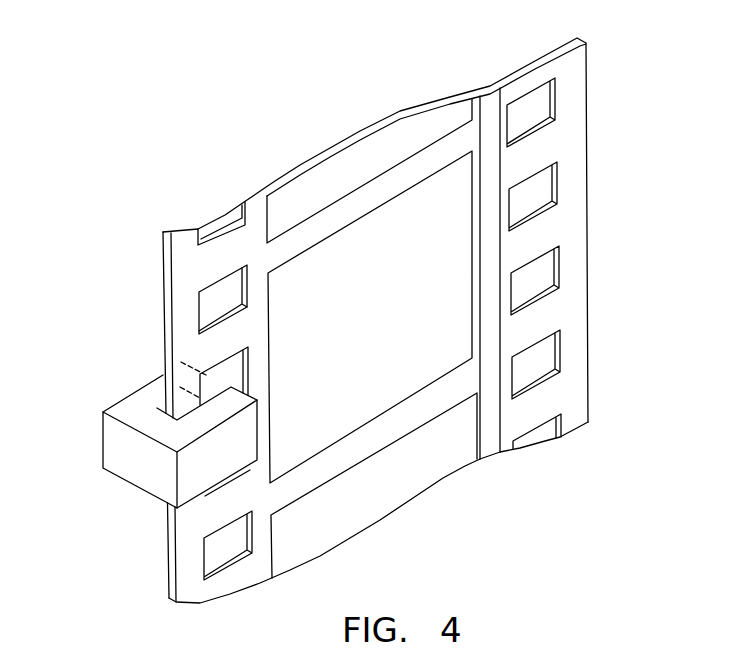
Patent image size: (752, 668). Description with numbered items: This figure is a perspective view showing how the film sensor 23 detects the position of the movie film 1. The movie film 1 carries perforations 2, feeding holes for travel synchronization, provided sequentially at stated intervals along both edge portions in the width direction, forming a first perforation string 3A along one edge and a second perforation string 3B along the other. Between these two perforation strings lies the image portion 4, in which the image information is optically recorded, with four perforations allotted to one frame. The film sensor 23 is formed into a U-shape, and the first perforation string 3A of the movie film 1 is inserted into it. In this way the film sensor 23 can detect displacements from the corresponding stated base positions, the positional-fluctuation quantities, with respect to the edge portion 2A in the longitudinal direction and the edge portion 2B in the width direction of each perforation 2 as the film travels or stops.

The movie film 1 is at (615, 268).
The perforation 2 is at (560, 357).
The edge portion in the longitudinal direction 2A is at (212, 278).
The edge portion in the width direction 2B is at (196, 315).
The first perforation string 3A is at (218, 212).
The second perforation string 3B is at (517, 63).
The image portion 4 is at (372, 382).
The film sensor 23 is at (103, 437).